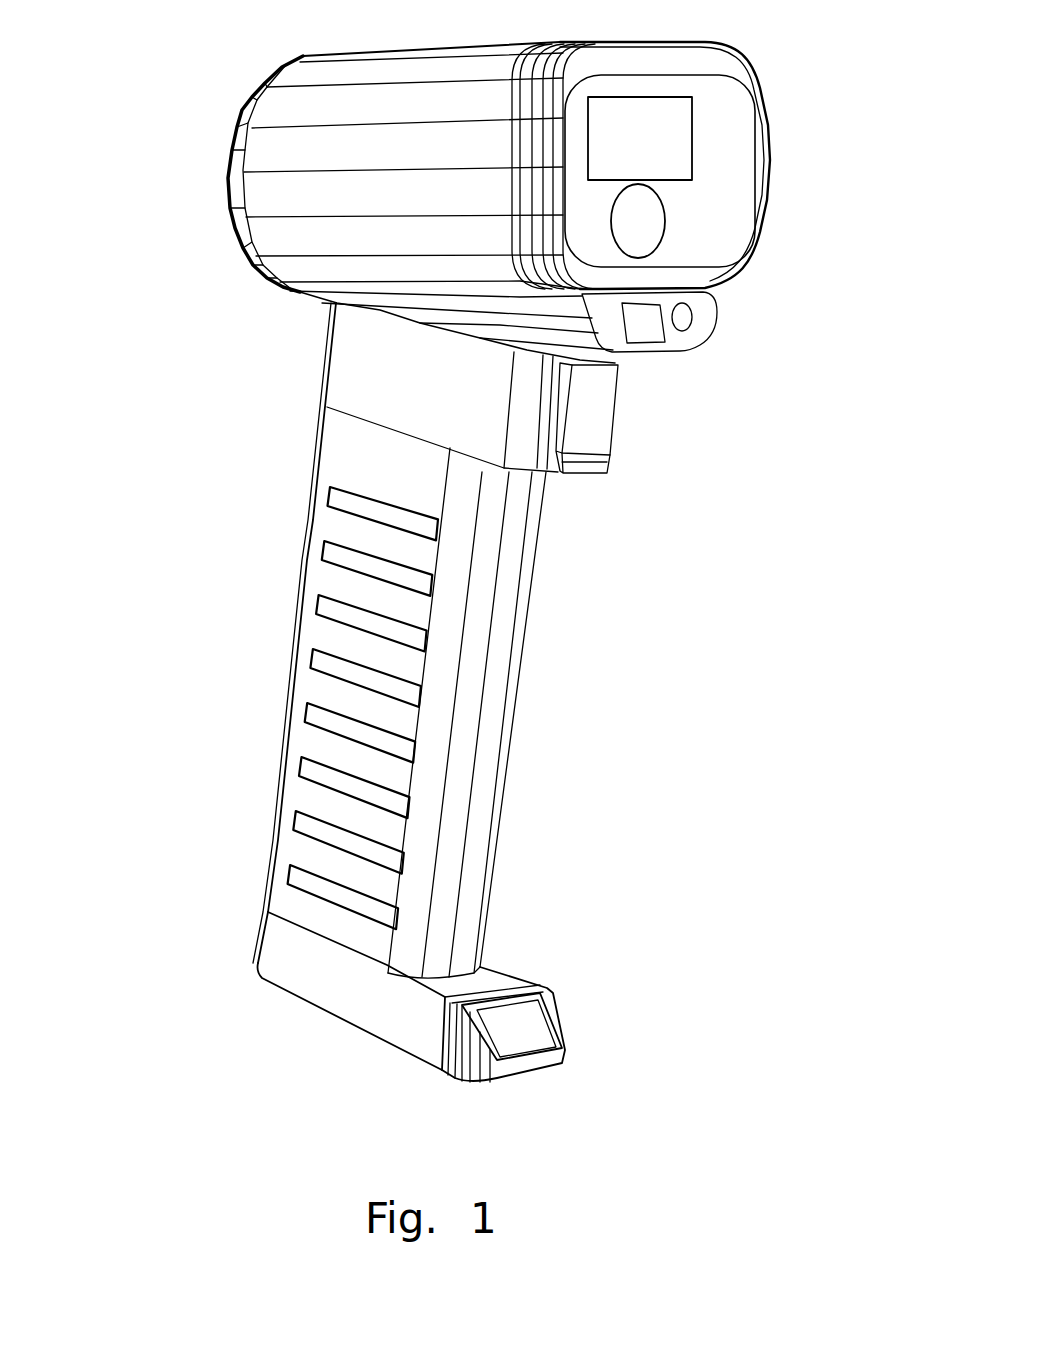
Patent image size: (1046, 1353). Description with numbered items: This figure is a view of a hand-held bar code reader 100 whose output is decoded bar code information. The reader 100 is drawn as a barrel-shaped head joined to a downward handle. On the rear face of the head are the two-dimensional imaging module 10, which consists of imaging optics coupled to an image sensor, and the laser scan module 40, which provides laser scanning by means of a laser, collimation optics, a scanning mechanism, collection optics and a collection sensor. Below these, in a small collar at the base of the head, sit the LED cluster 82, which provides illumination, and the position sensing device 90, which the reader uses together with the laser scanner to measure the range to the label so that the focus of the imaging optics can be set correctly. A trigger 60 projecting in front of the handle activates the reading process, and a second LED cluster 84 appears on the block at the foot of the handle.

The reader 100 is at (483, 543).
The laser scan module 40 is at (663, 125).
The 2D imaging module 10 is at (657, 220).
The LED cluster 82 is at (643, 338).
The position sensing device 90 is at (688, 320).
The trigger 60 is at (618, 433).
The LED cluster 84 is at (530, 1038).